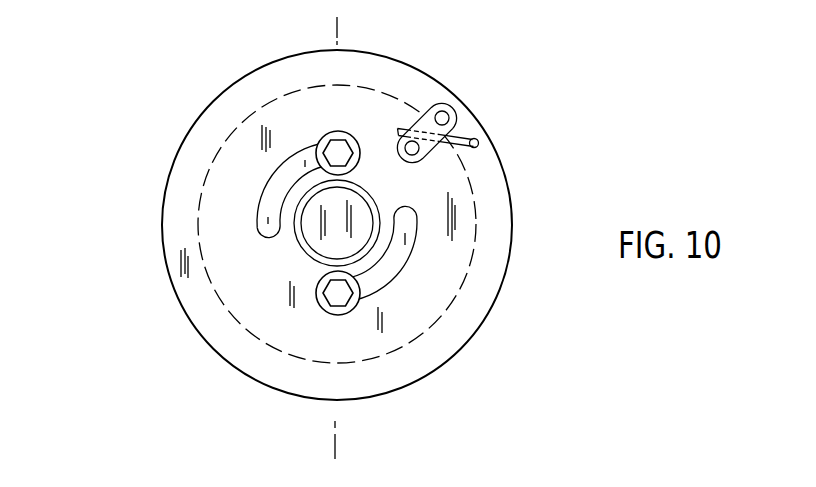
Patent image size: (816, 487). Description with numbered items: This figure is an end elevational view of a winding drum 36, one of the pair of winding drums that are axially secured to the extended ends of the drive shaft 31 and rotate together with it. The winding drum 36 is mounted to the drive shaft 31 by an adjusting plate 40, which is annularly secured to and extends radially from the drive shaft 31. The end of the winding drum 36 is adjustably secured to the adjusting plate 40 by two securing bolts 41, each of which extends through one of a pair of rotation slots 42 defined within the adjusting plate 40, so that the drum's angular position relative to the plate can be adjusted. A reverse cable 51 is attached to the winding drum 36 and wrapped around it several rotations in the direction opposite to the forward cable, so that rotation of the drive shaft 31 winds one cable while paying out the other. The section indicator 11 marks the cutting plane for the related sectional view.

The section line 11 is at (337, 17).
The drive shaft 31 is at (311, 240).
The winding drum 36 is at (480, 193).
The adjusting plate 40 is at (150, 244).
The securing bolt 41 is at (335, 148).
The rotation slot 42 is at (262, 192).
The reverse cable 51 is at (443, 138).